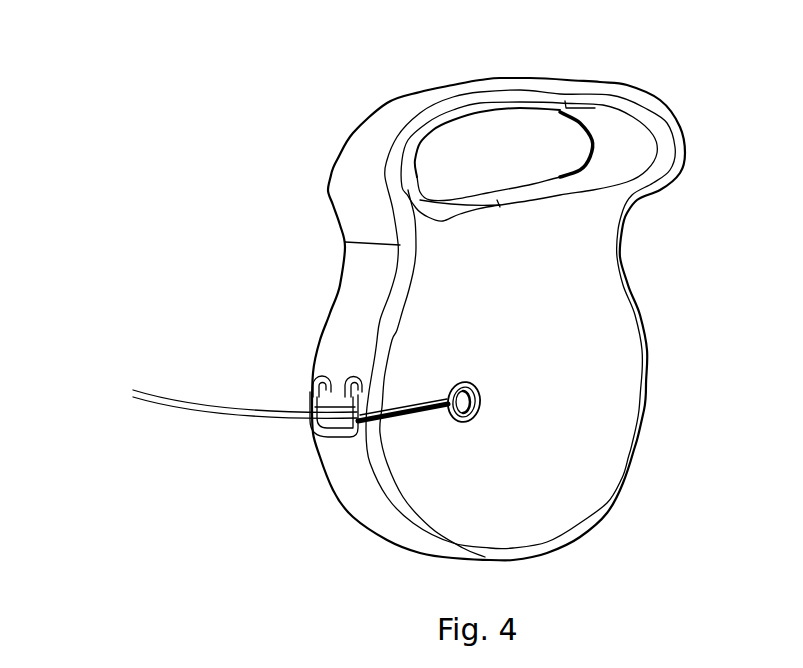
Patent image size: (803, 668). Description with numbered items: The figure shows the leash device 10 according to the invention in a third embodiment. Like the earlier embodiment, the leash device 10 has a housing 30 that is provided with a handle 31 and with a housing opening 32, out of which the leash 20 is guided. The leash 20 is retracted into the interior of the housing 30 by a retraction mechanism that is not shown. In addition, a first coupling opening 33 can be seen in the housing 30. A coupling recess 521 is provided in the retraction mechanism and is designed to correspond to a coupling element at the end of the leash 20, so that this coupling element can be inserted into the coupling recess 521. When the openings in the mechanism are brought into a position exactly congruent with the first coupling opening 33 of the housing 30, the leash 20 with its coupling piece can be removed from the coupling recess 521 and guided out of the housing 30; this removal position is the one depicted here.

The leash device 10 is at (318, 86).
The leash 20 is at (187, 403).
The housing 30 is at (607, 413).
The handle 31 is at (628, 105).
The housing opening 32 is at (310, 383).
The first coupling opening 33 is at (458, 416).
The coupling recess 521 is at (387, 420).